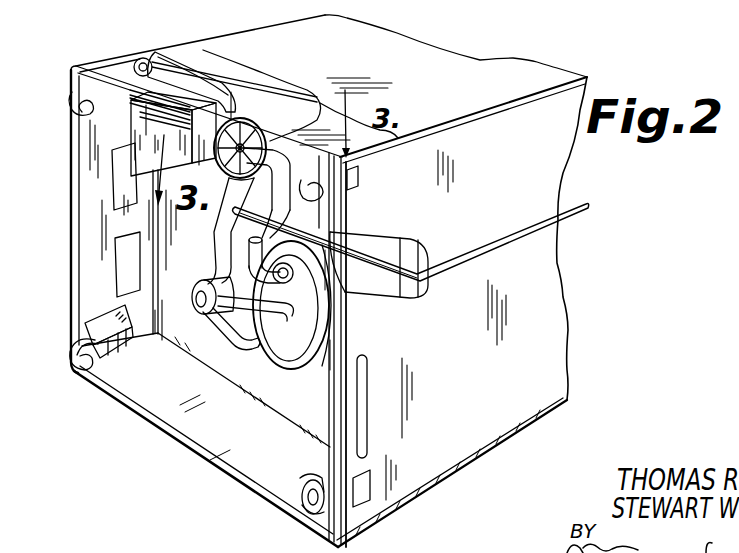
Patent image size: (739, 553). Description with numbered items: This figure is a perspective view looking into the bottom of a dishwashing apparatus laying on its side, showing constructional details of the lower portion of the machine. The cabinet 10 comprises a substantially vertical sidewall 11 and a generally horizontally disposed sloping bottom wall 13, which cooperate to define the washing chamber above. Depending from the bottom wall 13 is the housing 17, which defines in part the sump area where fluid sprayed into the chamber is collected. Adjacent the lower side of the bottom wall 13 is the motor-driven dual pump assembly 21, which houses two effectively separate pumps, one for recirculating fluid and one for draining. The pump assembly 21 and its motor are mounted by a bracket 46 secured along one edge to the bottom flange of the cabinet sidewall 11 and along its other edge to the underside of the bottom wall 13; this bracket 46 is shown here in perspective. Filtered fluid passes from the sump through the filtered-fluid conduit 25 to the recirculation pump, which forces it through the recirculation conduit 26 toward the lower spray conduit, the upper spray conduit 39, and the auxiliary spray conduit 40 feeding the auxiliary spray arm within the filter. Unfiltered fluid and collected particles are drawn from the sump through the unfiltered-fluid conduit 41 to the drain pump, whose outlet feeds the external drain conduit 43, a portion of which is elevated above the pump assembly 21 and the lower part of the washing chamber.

The cabinet 10 is at (160, 19).
The sidewall 11 is at (533, 123).
The bottom wall 13 is at (237, 363).
The housing 17 is at (293, 343).
The pump assembly 21 is at (270, 96).
The filtered-fluid conduit 25 is at (323, 212).
The recirculation conduit 26 is at (217, 247).
The upper spray conduit 39 is at (568, 222).
The auxiliary spray conduit 40 is at (224, 326).
The unfiltered-fluid conduit 41 is at (210, 323).
The drain conduit 43 is at (192, 83).
The bracket 46 is at (147, 128).